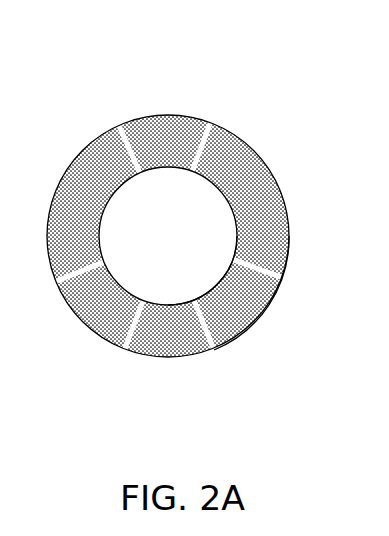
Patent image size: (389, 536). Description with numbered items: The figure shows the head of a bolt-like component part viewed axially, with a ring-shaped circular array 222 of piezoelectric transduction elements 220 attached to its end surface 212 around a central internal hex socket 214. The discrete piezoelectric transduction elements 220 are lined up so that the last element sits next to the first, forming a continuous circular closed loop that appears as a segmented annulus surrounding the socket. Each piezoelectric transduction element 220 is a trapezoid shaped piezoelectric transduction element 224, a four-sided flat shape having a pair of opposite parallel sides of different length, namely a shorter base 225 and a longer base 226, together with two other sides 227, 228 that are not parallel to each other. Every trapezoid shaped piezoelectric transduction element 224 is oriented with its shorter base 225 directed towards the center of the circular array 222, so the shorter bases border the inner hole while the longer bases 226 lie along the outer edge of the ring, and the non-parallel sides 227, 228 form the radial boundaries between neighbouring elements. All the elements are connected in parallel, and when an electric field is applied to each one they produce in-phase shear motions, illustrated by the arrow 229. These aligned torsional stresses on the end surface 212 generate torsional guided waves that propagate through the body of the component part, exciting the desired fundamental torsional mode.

The end surface 212 is at (167, 118).
The internal hex socket 214 is at (167, 195).
The piezoelectric transduction element 220 is at (218, 328).
The circular array 222 is at (194, 220).
The trapezoid shaped piezoelectric transduction element 224 is at (218, 328).
The shorter base 225 is at (208, 298).
The longer base 226 is at (255, 320).
The side 227 is at (207, 337).
The side 228 is at (263, 282).
The arrow 229 is at (238, 303).